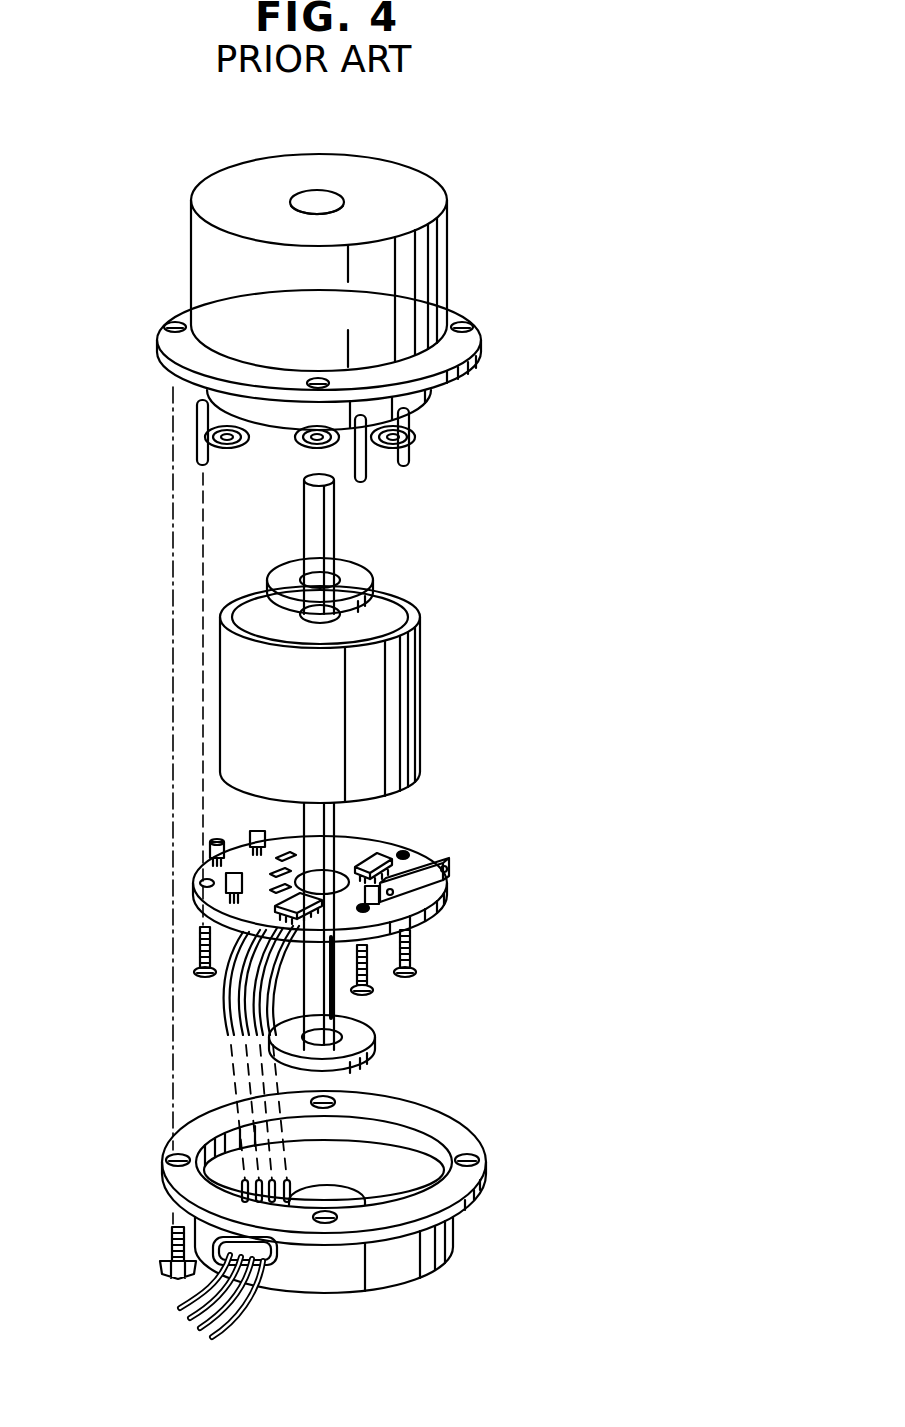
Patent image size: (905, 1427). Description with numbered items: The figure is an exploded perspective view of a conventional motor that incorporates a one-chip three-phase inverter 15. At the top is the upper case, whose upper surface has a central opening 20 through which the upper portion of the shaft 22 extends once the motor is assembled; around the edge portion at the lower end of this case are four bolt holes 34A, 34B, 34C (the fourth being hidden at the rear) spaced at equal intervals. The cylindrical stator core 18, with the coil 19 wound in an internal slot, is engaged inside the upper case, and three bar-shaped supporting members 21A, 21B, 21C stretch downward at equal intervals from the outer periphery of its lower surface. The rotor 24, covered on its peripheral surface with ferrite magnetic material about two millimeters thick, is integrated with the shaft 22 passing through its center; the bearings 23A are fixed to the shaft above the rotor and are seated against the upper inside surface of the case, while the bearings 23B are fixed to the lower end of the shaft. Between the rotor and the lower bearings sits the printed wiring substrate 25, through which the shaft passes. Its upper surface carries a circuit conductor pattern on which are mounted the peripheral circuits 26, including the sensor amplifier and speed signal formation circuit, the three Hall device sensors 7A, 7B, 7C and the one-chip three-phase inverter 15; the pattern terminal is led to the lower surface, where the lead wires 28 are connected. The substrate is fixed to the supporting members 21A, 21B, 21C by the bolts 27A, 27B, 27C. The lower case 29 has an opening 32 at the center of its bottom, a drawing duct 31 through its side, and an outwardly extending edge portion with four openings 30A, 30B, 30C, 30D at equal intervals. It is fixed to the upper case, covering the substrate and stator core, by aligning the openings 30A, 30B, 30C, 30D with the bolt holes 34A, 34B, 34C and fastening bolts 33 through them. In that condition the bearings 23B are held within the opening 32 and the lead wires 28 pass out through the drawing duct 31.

The opening 20 is at (327, 195).
The bolt hole 34A is at (170, 326).
The bolt hole 34B is at (318, 378).
The bolt hole 34C is at (471, 322).
The stator core 18 is at (433, 396).
The coil 19 is at (416, 427).
The supporting member 21A is at (197, 445).
The supporting member 21B is at (363, 470).
The supporting member 21C is at (406, 455).
The shaft 22 is at (304, 512).
The bearings 23A is at (370, 590).
The rotor 24 is at (416, 672).
The Hall device sensor 7A is at (258, 830).
The Hall device sensor 7B is at (212, 848).
The Hall device sensor 7C is at (205, 883).
The peripheral circuit 26 is at (388, 848).
The one-chip three-phase inverter 15 is at (448, 862).
The printed wiring substrate 25 is at (446, 897).
The bolt 27A is at (199, 948).
The bolt 27B is at (368, 968).
The bolt 27C is at (412, 948).
The lead wires 28 is at (222, 1010).
The bearings 23B is at (371, 1038).
The lower case 29 is at (461, 1236).
The opening 30A is at (167, 1159).
The opening 30B is at (325, 1225).
The opening 30C is at (478, 1156).
The opening 30D is at (333, 1101).
The opening 32 is at (350, 1192).
The bolt 33 is at (167, 1244).
The drawing duct 31 is at (275, 1270).